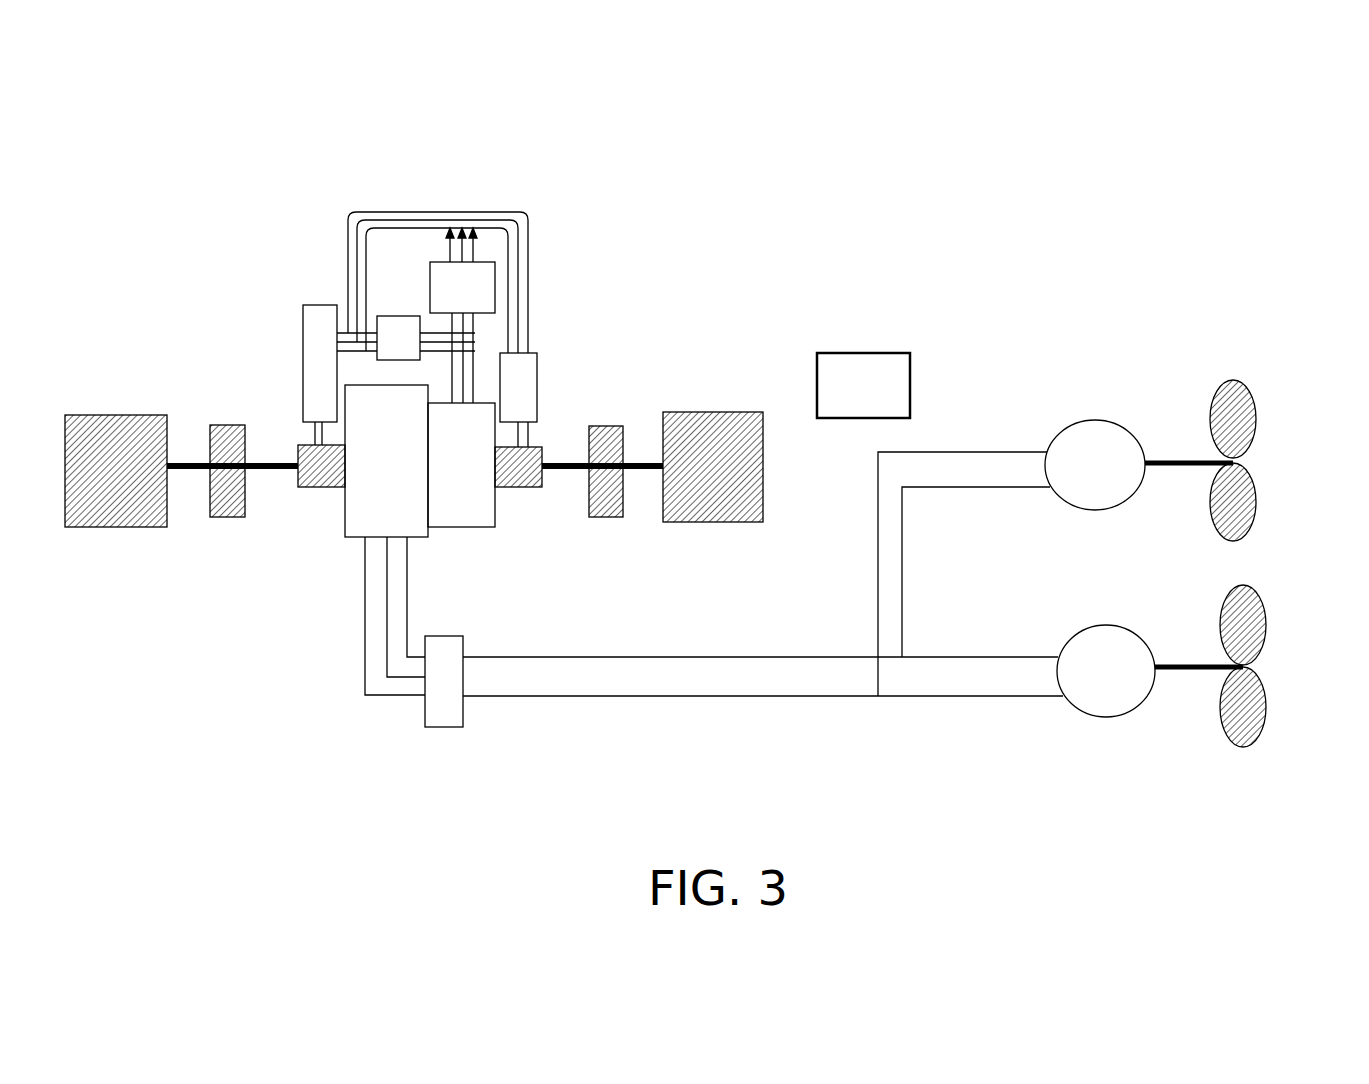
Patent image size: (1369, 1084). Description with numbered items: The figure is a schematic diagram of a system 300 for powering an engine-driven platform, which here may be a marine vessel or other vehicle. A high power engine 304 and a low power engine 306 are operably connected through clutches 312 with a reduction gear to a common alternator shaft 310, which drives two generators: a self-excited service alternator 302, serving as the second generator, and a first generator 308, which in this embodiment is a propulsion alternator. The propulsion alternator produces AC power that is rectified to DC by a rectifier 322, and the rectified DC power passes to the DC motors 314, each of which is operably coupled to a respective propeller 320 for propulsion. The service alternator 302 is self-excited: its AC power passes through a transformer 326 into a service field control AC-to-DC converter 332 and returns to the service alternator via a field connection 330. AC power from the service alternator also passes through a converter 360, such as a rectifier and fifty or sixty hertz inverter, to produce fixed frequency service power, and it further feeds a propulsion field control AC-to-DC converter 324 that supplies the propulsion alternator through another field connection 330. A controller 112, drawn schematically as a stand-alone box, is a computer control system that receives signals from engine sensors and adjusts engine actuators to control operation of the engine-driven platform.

The system 300 is at (770, 170).
The service alternator 302 is at (457, 527).
The high power engine 304 is at (720, 517).
The low power engine 306 is at (87, 527).
The first generator 308 is at (345, 537).
The common alternator shaft 310 is at (183, 462).
The clutches 312 is at (235, 507).
The DC motors 314 is at (1095, 510).
The propellers 320 is at (1257, 503).
The rectifier 322 is at (455, 718).
The propulsion field control AC-to-DC converter 324 is at (302, 363).
The transformer 326 is at (395, 316).
The field connection 330 is at (307, 489).
The service field control AC-to-DC converter 332 is at (537, 365).
The converter 360 is at (495, 278).
The controller 112 is at (863, 385).